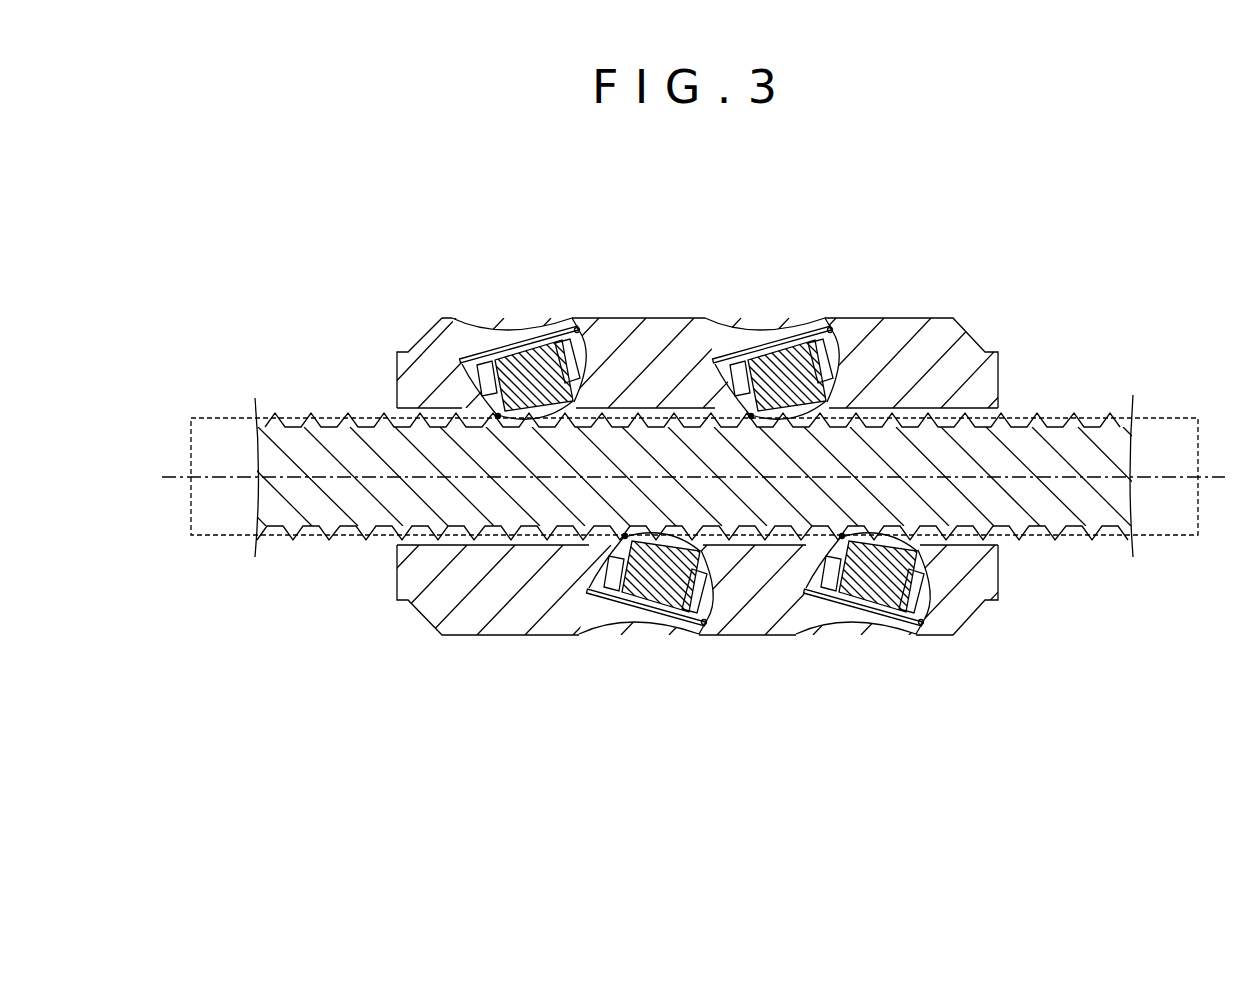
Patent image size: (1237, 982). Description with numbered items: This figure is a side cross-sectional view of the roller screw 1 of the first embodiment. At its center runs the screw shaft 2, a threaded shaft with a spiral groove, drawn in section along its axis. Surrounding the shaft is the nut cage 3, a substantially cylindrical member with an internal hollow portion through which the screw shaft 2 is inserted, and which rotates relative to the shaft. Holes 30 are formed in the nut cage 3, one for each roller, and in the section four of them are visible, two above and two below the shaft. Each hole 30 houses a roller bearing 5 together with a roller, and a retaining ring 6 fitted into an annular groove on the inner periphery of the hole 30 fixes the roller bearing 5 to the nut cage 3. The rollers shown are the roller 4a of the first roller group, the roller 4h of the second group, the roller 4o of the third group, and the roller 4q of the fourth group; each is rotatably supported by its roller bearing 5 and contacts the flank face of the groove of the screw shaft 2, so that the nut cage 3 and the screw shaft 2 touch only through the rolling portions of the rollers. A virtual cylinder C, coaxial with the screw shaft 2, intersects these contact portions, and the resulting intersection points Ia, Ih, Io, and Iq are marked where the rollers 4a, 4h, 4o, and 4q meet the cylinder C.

The roller screw 1 is at (1092, 251).
The screw shaft 2 is at (357, 409).
The nut cage 3 is at (936, 318).
The roller 4a is at (503, 335).
The roller 4o is at (756, 335).
The roller 4h is at (655, 617).
The roller 4q is at (873, 617).
The roller bearing 5 is at (585, 330).
The retaining ring 6 is at (540, 332).
The hole 30 is at (462, 345).
The cylinder C is at (1168, 416).
The intersection point Ia is at (497, 435).
The intersection point Io is at (752, 435).
The intersection point Ih is at (618, 520).
The intersection point Iq is at (840, 520).